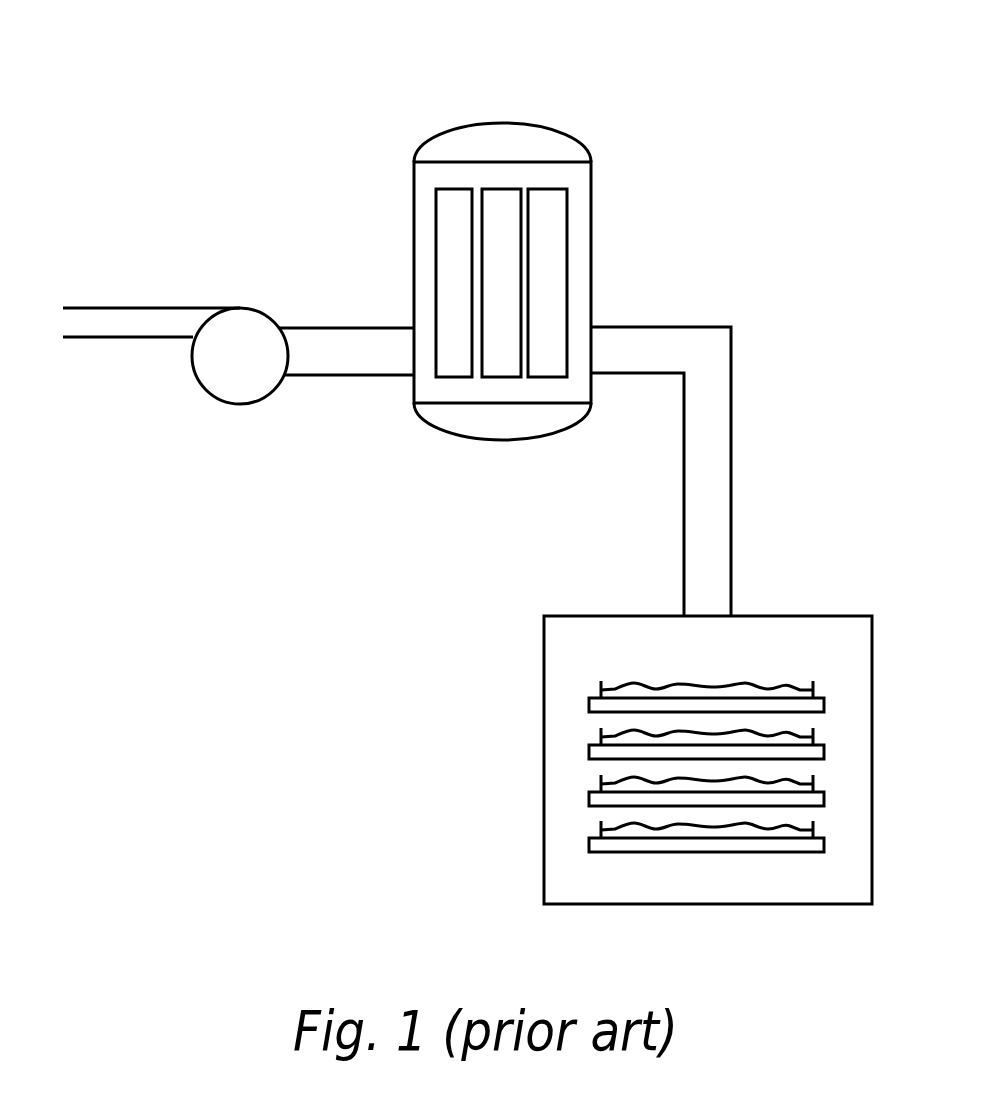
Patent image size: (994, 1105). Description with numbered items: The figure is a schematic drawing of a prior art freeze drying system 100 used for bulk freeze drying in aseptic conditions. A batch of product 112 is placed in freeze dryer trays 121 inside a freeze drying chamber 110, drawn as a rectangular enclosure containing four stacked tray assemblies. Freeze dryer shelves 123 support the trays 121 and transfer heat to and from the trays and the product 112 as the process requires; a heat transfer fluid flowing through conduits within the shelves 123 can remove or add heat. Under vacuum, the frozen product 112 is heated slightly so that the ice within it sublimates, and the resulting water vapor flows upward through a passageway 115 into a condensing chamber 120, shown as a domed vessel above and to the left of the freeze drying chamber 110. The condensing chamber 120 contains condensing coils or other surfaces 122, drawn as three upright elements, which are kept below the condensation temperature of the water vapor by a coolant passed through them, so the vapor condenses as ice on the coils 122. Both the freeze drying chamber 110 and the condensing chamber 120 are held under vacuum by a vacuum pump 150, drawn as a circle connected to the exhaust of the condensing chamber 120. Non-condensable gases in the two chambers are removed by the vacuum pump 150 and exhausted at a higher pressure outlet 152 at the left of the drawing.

The prior art freeze drying system 100 is at (457, 62).
The freeze drying chamber 110 is at (544, 852).
The product 112 is at (763, 682).
The passageway 115 is at (731, 473).
The condensing chamber 120 is at (592, 188).
The freeze dryer trays 121 is at (597, 683).
The condensing coils 122 is at (436, 226).
The freeze dryer shelves 123 is at (593, 704).
The vacuum pump 150 is at (238, 308).
The higher pressure outlet 152 is at (147, 318).